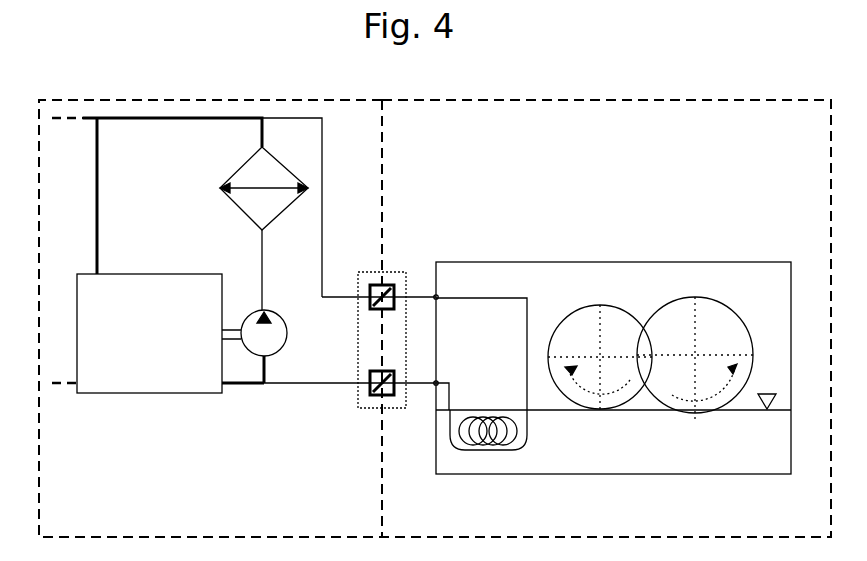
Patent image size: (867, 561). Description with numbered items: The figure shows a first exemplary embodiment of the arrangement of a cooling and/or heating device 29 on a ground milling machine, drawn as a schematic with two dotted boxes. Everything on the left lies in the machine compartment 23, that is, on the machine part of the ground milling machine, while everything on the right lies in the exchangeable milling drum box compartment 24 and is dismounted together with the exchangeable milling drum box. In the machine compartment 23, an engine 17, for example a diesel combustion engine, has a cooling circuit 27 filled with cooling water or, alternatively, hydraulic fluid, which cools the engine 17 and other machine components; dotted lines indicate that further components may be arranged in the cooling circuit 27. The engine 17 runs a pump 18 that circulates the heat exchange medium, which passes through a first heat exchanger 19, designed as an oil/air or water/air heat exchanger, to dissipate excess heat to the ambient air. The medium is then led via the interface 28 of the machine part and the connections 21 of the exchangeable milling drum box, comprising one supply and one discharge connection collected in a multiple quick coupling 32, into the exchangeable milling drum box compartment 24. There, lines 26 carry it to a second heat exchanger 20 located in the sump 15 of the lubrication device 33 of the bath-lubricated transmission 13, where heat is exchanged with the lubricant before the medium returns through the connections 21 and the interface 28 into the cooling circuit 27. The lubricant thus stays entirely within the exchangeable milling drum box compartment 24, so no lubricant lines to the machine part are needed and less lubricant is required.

The transmission 13 is at (610, 333).
The sump 15 is at (748, 448).
The engine 17 is at (145, 358).
The pump 18 is at (260, 340).
The first heat exchanger 19 is at (258, 172).
The second heat exchanger 20 is at (495, 448).
The connections 21 is at (393, 287).
The machine compartment 23 is at (117, 100).
The exchangeable milling drum box compartment 24 is at (722, 100).
The lines 26 is at (465, 297).
The cooling circuit 27 is at (208, 118).
The interface 28 is at (375, 297).
The cooling and/or heating device 29 is at (553, 455).
The multiple quick coupling 32 is at (395, 272).
The lubrication device 33 is at (697, 458).